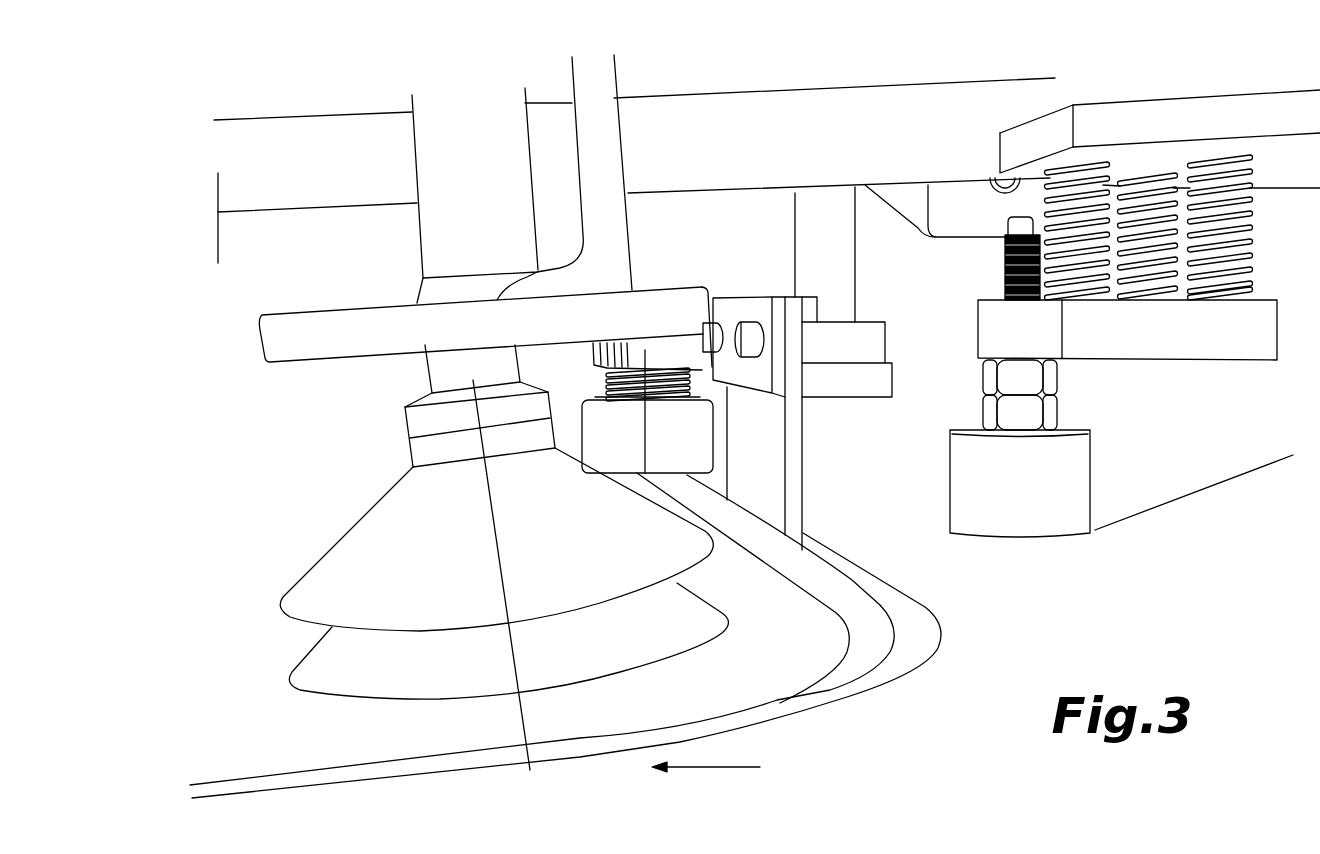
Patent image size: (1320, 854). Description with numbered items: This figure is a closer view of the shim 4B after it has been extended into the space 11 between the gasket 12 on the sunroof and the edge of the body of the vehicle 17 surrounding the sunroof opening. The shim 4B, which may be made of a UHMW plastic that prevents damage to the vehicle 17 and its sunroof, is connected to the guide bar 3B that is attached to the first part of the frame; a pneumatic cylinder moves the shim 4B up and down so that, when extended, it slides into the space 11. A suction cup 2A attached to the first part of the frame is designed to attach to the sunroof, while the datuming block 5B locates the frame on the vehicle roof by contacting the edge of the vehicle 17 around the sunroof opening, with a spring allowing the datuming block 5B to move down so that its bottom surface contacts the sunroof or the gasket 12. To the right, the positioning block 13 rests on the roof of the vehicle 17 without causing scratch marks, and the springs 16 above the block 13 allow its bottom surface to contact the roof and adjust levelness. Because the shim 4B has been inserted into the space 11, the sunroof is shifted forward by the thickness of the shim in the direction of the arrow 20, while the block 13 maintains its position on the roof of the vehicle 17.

The guide bar 3B is at (705, 100).
The suction cup 2A is at (368, 512).
The datuming block 5B is at (588, 455).
The shim 4B is at (797, 477).
The space 11 is at (855, 572).
The gasket 12 is at (872, 652).
The positioning block 13 is at (1073, 497).
The springs 16 is at (1248, 236).
The vehicle 17 is at (1196, 468).
The arrow 20 is at (706, 757).